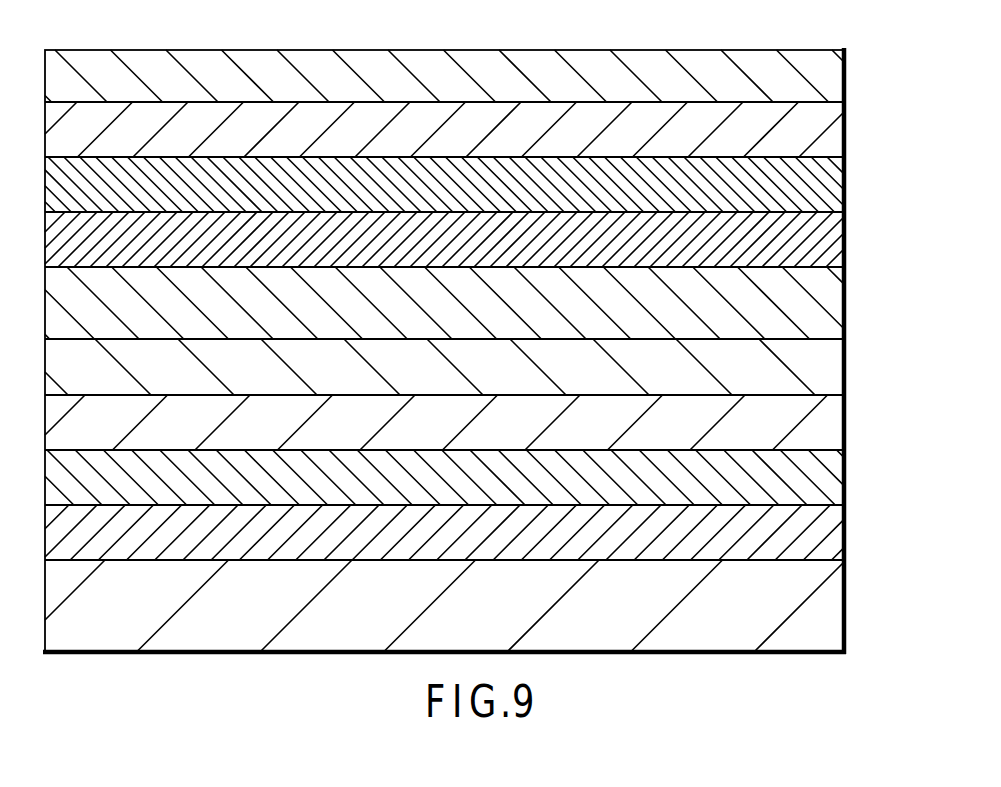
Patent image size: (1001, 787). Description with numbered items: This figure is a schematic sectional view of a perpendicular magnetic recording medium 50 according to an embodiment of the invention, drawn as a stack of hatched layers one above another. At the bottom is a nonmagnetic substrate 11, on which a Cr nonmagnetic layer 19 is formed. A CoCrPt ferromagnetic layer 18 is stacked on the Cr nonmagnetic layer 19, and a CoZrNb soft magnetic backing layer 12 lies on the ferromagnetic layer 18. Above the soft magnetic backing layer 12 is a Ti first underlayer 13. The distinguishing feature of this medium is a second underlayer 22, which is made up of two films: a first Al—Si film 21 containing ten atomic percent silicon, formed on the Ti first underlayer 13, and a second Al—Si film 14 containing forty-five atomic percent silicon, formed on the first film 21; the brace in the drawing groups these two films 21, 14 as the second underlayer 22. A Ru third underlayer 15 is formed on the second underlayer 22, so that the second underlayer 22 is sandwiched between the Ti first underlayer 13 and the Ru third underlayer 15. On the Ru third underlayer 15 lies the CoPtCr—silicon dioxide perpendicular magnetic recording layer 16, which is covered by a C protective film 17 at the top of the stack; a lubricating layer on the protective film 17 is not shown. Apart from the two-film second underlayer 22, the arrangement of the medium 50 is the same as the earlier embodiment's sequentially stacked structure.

The magnetoresistive effect element 50 is at (809, 42).
The C protective film 17 is at (466, 76).
The CoPtCr—SiO2 perpendicular magnetic recording layer 16 is at (466, 129).
The Ru third underlayer 15 is at (466, 184).
The Al—Si second underlayer film 14 is at (466, 239).
The second underlayer 22 is at (491, 275).
The first Al-10 at % Si film 21 is at (466, 303).
The Ti first underlayer 13 is at (466, 367).
The CoZrNb soft magnetic backing layer 12 is at (466, 422).
The CoCrPt ferromagnetic layer 18 is at (466, 477).
The Cr nonmagnetic layer 19 is at (466, 532).
The substrate 11 is at (466, 606).